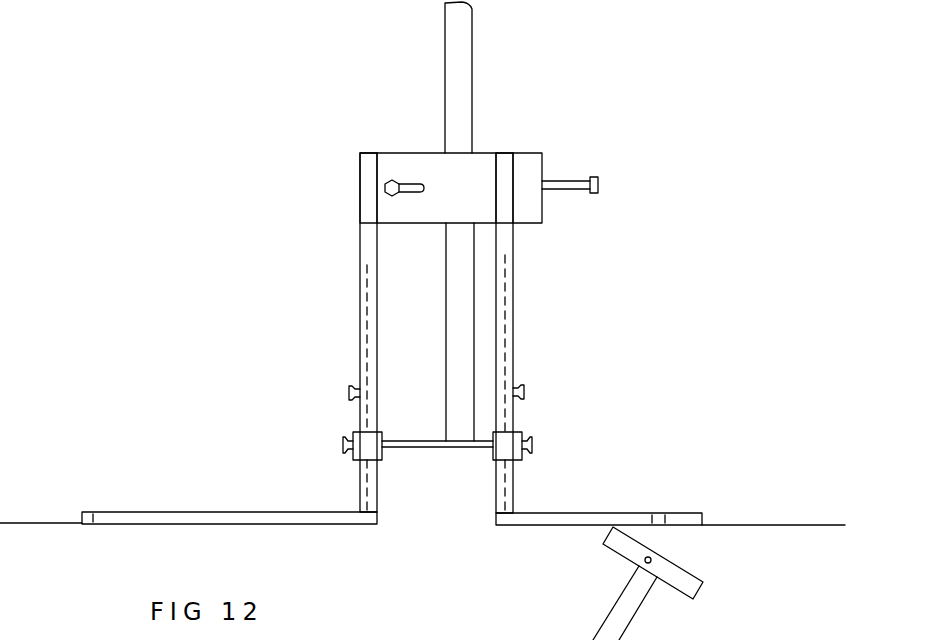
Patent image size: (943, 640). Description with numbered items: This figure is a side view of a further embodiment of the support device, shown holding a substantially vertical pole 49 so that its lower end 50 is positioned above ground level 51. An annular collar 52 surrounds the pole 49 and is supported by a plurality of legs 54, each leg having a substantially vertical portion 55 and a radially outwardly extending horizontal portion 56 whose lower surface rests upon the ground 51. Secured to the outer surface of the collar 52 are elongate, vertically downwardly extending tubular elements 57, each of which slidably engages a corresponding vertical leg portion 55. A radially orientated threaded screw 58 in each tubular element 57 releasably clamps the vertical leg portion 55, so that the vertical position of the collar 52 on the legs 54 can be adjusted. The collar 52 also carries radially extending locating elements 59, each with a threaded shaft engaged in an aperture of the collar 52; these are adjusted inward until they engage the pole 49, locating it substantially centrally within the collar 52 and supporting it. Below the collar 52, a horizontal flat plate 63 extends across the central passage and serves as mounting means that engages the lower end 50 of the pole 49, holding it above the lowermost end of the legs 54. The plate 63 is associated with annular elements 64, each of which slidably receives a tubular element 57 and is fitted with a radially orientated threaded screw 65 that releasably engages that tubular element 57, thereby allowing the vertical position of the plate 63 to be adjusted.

The pole 49 is at (457, 72).
The lower end of pole 50 is at (463, 427).
The ground level 51 is at (793, 522).
The annular collar 52 is at (465, 188).
The legs 54 is at (320, 492).
The vertical portion of leg 55 is at (365, 342).
The horizontal portion of leg 56 is at (137, 467).
The tubular element 57 is at (503, 232).
The threaded screw 58 is at (348, 393).
The locating element 59 is at (410, 173).
The horizontal flat plate 63 is at (397, 437).
The annular element 64 is at (507, 448).
The threaded screw 65 is at (537, 445).